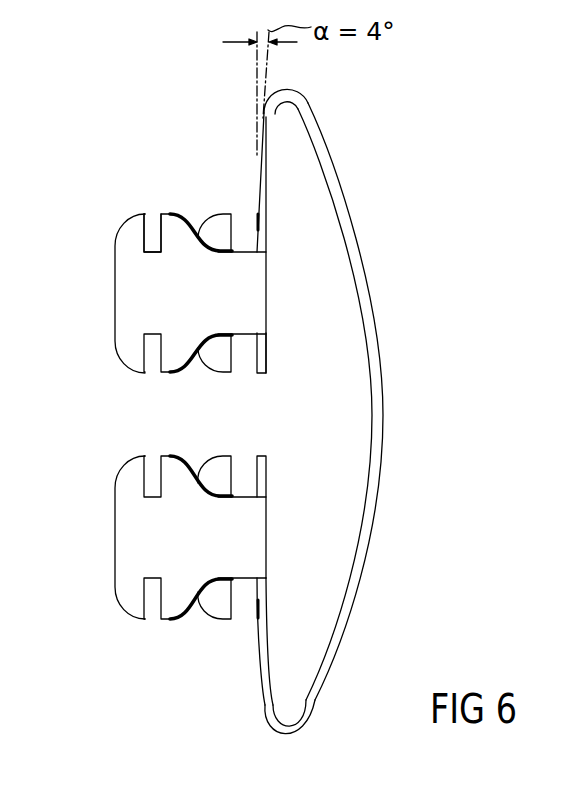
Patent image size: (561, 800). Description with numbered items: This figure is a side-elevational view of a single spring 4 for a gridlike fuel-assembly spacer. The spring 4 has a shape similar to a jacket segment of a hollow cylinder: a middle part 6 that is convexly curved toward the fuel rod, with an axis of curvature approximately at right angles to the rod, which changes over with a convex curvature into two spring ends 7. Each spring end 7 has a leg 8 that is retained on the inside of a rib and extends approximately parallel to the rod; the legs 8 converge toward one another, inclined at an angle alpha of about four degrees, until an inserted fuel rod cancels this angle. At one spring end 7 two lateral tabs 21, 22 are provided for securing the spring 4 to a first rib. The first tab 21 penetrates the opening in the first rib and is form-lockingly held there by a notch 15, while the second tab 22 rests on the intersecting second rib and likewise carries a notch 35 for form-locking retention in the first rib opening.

The spring 4 is at (333, 167).
The middle part 6 is at (378, 403).
The spring end 7 is at (265, 607).
The leg 8 is at (267, 478).
The notch 15 is at (240, 362).
The first tab 21 is at (217, 225).
The second tab 22 is at (130, 288).
The notch 35 is at (157, 212).